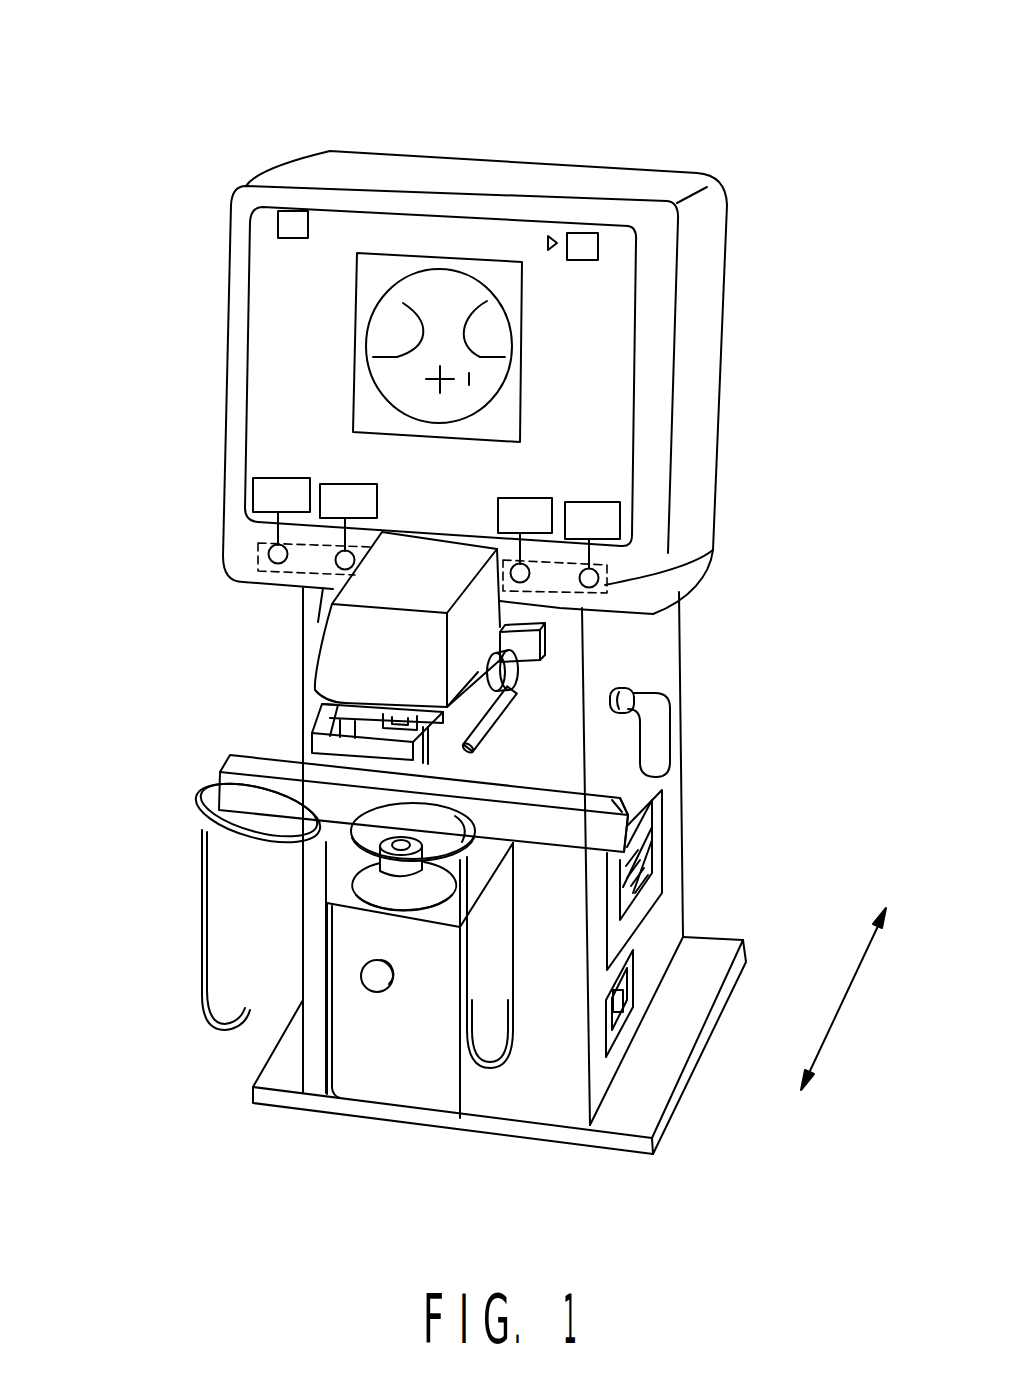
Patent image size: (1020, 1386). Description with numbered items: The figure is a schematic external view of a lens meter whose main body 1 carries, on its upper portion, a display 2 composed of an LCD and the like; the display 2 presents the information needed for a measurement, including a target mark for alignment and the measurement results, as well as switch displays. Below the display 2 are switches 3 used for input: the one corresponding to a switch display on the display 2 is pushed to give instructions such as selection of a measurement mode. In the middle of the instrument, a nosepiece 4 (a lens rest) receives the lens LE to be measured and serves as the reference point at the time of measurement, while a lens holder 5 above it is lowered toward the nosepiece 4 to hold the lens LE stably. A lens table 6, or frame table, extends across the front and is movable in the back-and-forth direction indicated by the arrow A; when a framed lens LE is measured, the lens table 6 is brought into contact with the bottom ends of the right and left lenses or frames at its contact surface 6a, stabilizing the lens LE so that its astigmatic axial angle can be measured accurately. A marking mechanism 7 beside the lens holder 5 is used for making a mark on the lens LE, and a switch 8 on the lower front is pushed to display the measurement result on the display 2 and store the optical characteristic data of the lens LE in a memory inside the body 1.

The main body 1 is at (622, 122).
The display 2 is at (280, 438).
The switches 3 is at (260, 544).
The nosepiece 4 is at (367, 882).
The lens holder 5 is at (314, 720).
The lens table 6 is at (228, 755).
The contact surface 6a is at (600, 830).
The marking mechanism 7 is at (455, 716).
The switch 8 is at (375, 992).
The lens LE is at (430, 818).
The arrow A is at (848, 999).